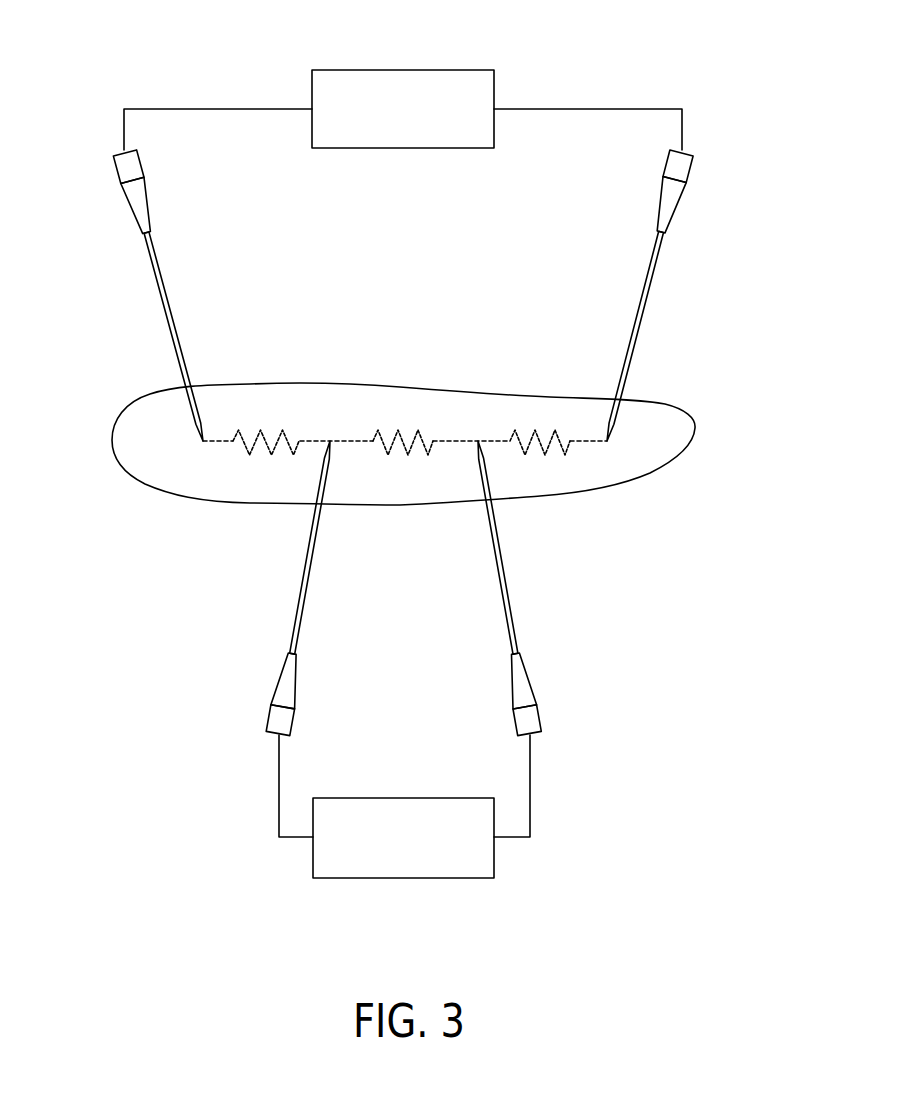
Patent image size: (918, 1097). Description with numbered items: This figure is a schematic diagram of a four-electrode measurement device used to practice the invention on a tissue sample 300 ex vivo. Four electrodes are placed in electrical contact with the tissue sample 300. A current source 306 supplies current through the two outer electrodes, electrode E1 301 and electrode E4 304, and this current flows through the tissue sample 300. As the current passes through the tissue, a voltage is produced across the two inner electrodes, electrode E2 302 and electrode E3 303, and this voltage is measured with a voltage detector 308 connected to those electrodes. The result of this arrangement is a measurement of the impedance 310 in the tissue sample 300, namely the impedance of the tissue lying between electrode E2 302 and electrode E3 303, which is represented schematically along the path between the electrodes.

The tissue sample 300 is at (186, 528).
The electrode E1 301 is at (158, 281).
The electrode E2 302 is at (306, 582).
The electrode E3 303 is at (502, 565).
The electrode E4 304 is at (638, 332).
The current source 306 is at (452, 70).
The voltage detector 308 is at (460, 878).
The impedance Z2,3 310 is at (398, 415).